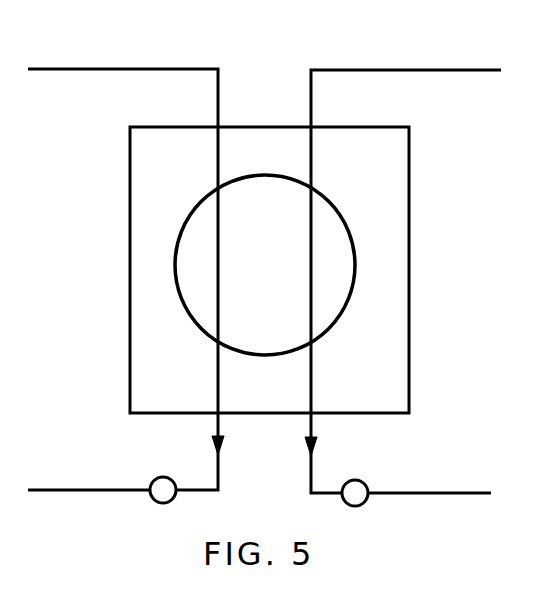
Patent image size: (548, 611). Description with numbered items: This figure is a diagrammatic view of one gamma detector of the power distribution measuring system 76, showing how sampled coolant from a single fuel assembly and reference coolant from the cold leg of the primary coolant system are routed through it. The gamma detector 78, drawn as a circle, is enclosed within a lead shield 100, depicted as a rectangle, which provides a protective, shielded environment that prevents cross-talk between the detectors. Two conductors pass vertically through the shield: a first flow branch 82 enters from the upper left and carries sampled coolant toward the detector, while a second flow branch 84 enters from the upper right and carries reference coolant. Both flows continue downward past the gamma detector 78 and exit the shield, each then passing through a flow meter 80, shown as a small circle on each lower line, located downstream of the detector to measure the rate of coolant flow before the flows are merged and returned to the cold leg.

The power distribution measuring system 76 is at (461, 56).
The gamma detector 78 is at (341, 288).
The flow meter 80 is at (159, 478).
The first flow branch 82 is at (118, 67).
The second flow branch 84 is at (372, 68).
The lead shield 100 is at (399, 188).